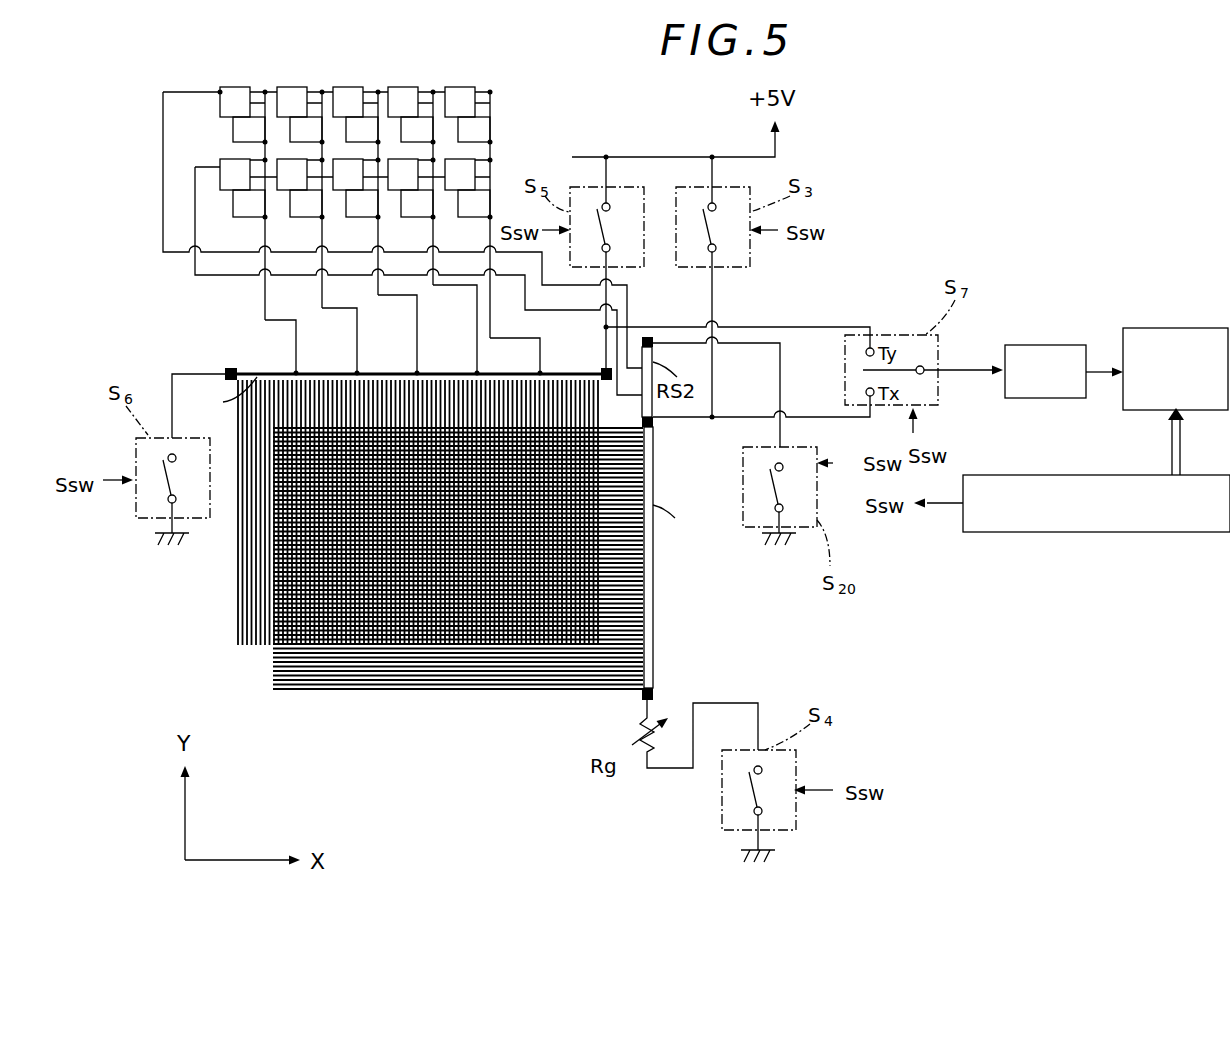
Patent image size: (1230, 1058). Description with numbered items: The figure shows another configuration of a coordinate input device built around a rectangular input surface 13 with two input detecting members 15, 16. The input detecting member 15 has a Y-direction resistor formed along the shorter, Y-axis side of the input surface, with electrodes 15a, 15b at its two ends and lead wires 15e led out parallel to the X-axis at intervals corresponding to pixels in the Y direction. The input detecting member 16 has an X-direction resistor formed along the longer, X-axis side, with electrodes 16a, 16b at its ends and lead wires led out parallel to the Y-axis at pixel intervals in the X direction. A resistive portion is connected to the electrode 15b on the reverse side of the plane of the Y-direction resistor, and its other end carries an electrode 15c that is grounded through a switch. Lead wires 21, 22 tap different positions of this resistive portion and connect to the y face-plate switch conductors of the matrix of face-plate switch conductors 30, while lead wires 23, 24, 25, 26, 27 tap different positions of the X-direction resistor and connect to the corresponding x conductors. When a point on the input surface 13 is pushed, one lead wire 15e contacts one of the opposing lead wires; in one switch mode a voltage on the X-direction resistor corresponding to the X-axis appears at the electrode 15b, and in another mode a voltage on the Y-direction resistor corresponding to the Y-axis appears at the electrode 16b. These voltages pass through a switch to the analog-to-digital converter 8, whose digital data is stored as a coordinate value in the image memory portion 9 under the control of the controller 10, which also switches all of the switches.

The analog-to-digital converter 8 is at (1040, 345).
The image memory portion 9 is at (1172, 328).
The controller 10 is at (1133, 532).
The input surface 13 is at (401, 531).
The input detecting member 15 is at (655, 555).
The electrode 15a is at (654, 690).
The electrode 15b is at (654, 425).
The electrode 15c is at (648, 337).
The lead wires 15e is at (497, 692).
The input detecting member 16 is at (212, 364).
The electrode 16a is at (232, 368).
The electrode 16b is at (602, 370).
The lead wire 21 is at (583, 287).
The lead wire 22 is at (525, 300).
The lead wire 23 is at (296, 362).
The lead wire 24 is at (357, 357).
The lead wire 25 is at (417, 347).
The lead wire 26 is at (477, 331).
The lead wire 27 is at (540, 354).
The switch matrix 30 is at (498, 120).